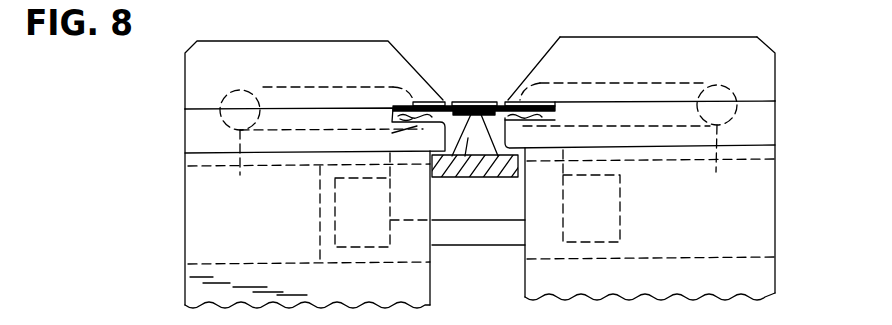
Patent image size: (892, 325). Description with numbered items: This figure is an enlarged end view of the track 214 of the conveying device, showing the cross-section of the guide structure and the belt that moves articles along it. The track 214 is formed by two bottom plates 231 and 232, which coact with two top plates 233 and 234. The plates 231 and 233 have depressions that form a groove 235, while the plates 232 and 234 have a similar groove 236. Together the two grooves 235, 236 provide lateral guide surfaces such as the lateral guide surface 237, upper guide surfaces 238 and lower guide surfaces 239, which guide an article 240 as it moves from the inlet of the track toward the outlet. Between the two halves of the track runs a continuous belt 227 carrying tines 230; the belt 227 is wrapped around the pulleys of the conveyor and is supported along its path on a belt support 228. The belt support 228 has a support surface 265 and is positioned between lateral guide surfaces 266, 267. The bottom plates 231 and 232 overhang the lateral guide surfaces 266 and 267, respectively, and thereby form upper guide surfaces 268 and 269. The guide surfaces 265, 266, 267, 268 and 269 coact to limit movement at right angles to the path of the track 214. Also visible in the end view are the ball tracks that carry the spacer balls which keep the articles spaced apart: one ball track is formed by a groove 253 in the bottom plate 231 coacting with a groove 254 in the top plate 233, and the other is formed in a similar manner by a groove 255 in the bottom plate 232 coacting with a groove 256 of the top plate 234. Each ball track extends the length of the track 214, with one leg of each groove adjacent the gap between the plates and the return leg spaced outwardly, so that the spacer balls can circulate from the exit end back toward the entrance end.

The track 214 is at (613, 33).
The continuous belt 227 is at (522, 185).
The belt support 228 is at (488, 216).
The tines 230 is at (456, 178).
The bottom plate 231 is at (775, 130).
The bottom plate 232 is at (183, 143).
The top plate 233 is at (777, 72).
The top plate 234 is at (301, 57).
The groove 235 is at (548, 119).
The groove 236 is at (426, 101).
The lateral guide surface 237 is at (413, 118).
The upper guide surface 238 is at (393, 104).
The lower guide surface 239 is at (392, 133).
The article 240 is at (472, 105).
The groove 253 is at (712, 164).
The groove 254 is at (708, 87).
The groove 255 is at (250, 168).
The groove 256 is at (238, 92).
The support surface 265 is at (426, 173).
The lateral guide surface 266 is at (527, 278).
The lateral guide surface 267 is at (428, 282).
The upper guide surface 268 is at (525, 165).
The upper guide surface 269 is at (428, 162).